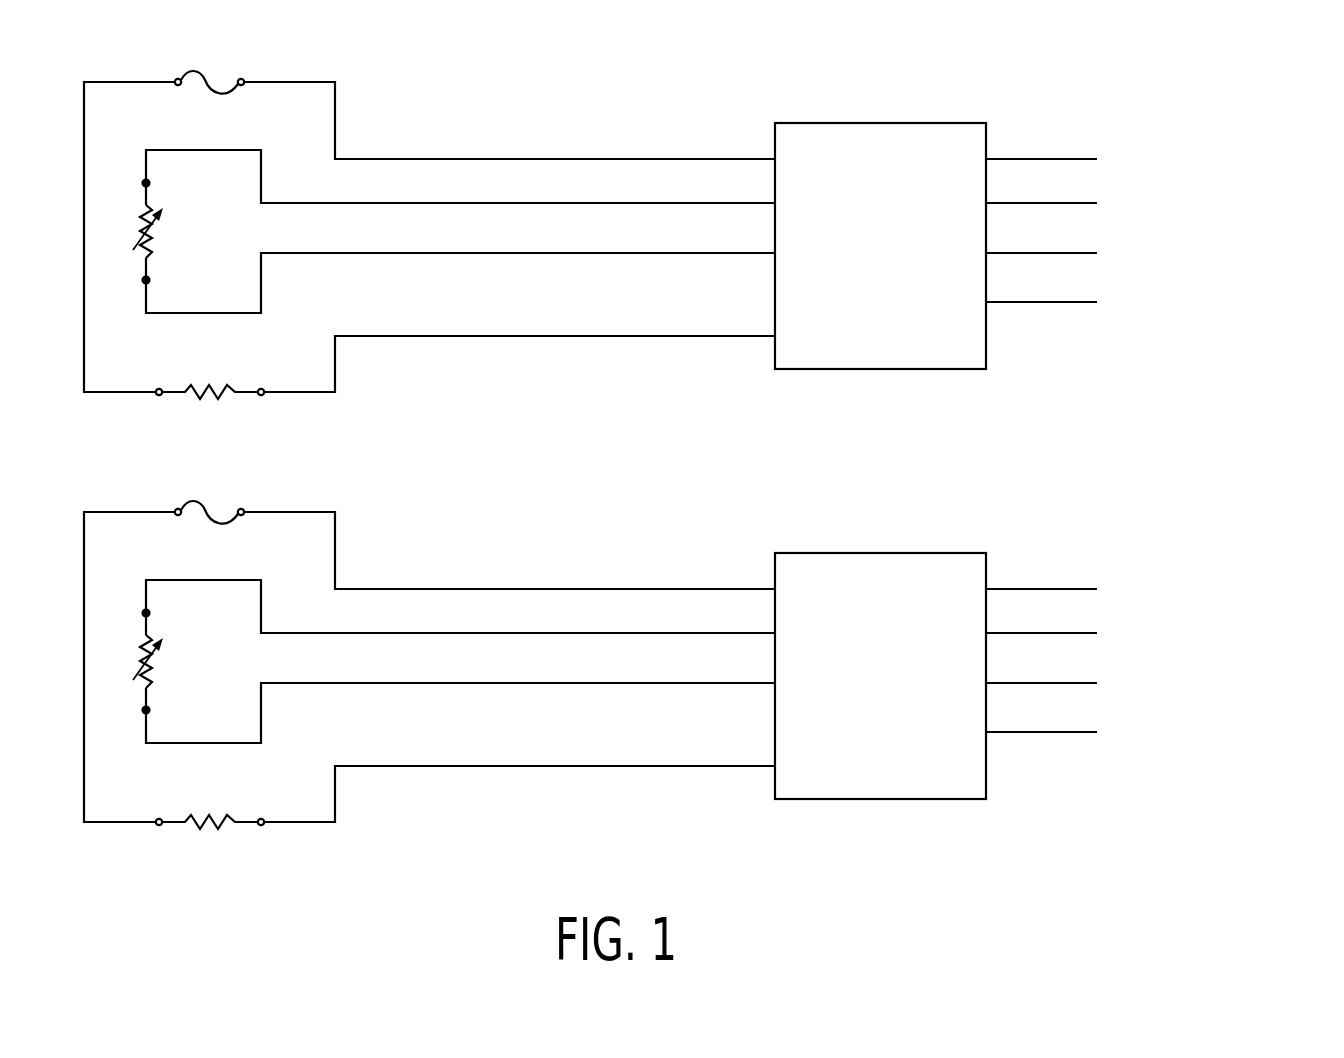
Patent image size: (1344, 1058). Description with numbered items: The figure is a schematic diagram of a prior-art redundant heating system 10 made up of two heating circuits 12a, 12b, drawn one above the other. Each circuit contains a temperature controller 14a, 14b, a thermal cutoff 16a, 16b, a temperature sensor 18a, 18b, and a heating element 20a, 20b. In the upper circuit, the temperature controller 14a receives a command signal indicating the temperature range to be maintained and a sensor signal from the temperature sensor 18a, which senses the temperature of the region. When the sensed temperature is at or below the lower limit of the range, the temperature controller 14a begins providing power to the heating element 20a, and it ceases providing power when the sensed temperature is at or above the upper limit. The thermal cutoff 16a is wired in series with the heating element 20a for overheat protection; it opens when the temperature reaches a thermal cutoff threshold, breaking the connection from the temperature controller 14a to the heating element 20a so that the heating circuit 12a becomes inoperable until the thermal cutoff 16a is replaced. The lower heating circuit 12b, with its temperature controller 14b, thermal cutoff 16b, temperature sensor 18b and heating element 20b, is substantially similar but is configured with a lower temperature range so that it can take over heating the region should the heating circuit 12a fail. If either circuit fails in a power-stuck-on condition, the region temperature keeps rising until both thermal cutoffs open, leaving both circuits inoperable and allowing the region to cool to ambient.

The redundant heating system 10 is at (706, 457).
The heating circuit 12a is at (1128, 70).
The heating circuit 12b is at (664, 686).
The temperature controller 14a is at (880, 231).
The temperature controller 14b is at (880, 661).
The thermal cutoff 16a is at (233, 69).
The thermal cutoff 16b is at (233, 499).
The temperature sensor 18a is at (188, 232).
The temperature sensor 18b is at (188, 662).
The heating element 20a is at (232, 378).
The heating element 20b is at (232, 808).